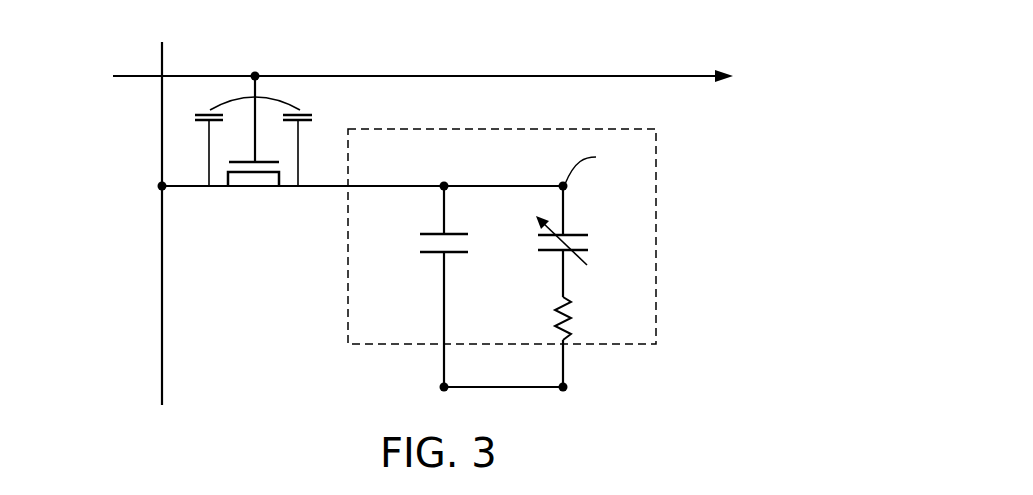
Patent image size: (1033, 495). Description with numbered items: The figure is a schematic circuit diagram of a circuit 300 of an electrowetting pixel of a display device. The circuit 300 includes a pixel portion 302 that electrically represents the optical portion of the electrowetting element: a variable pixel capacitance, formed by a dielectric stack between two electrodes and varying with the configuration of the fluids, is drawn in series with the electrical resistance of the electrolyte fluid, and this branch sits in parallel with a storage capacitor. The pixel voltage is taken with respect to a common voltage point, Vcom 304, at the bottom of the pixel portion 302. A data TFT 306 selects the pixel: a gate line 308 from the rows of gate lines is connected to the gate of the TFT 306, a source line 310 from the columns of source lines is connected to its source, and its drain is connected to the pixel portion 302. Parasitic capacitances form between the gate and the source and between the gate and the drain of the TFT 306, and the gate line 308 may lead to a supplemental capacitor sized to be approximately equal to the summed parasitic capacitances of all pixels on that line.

The circuit 300 is at (680, 38).
The pixel portion 302 is at (348, 260).
The Vcom 304 is at (522, 366).
The TFT 306 is at (254, 189).
The gate lines 308 is at (113, 76).
The source lines 310 is at (160, 345).